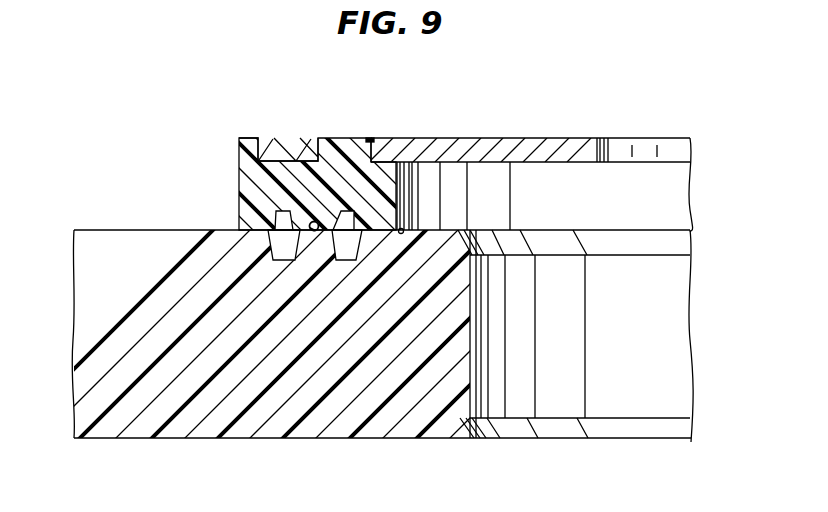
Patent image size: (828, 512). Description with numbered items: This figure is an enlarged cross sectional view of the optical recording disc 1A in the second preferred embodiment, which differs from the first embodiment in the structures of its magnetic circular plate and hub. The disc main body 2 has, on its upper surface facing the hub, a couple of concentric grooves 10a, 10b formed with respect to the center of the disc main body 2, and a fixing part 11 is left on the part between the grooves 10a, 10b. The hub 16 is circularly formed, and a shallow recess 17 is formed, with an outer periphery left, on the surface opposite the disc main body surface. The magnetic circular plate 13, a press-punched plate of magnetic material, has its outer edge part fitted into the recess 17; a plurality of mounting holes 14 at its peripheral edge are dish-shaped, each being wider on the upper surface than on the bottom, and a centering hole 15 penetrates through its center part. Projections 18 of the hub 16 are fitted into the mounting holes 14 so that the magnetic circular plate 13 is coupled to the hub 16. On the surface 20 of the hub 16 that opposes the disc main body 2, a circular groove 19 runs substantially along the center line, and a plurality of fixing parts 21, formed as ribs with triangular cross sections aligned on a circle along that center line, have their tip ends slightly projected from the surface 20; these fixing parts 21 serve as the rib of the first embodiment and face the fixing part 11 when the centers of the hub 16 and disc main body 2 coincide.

The optical recording disc 1A is at (116, 95).
The disc main body 2 is at (108, 229).
The groove 10a is at (293, 247).
The groove 10b is at (350, 247).
The fixing part 11 is at (316, 231).
The magnetic circular plate 13 is at (514, 138).
The mounting hole 14 is at (333, 137).
The centering hole 15 is at (612, 150).
The hub 16 is at (243, 137).
The recess 17 is at (284, 160).
The projection 18 is at (353, 137).
The circular groove 19 is at (274, 211).
The surface 20 is at (399, 232).
The fixing part 21 is at (271, 214).